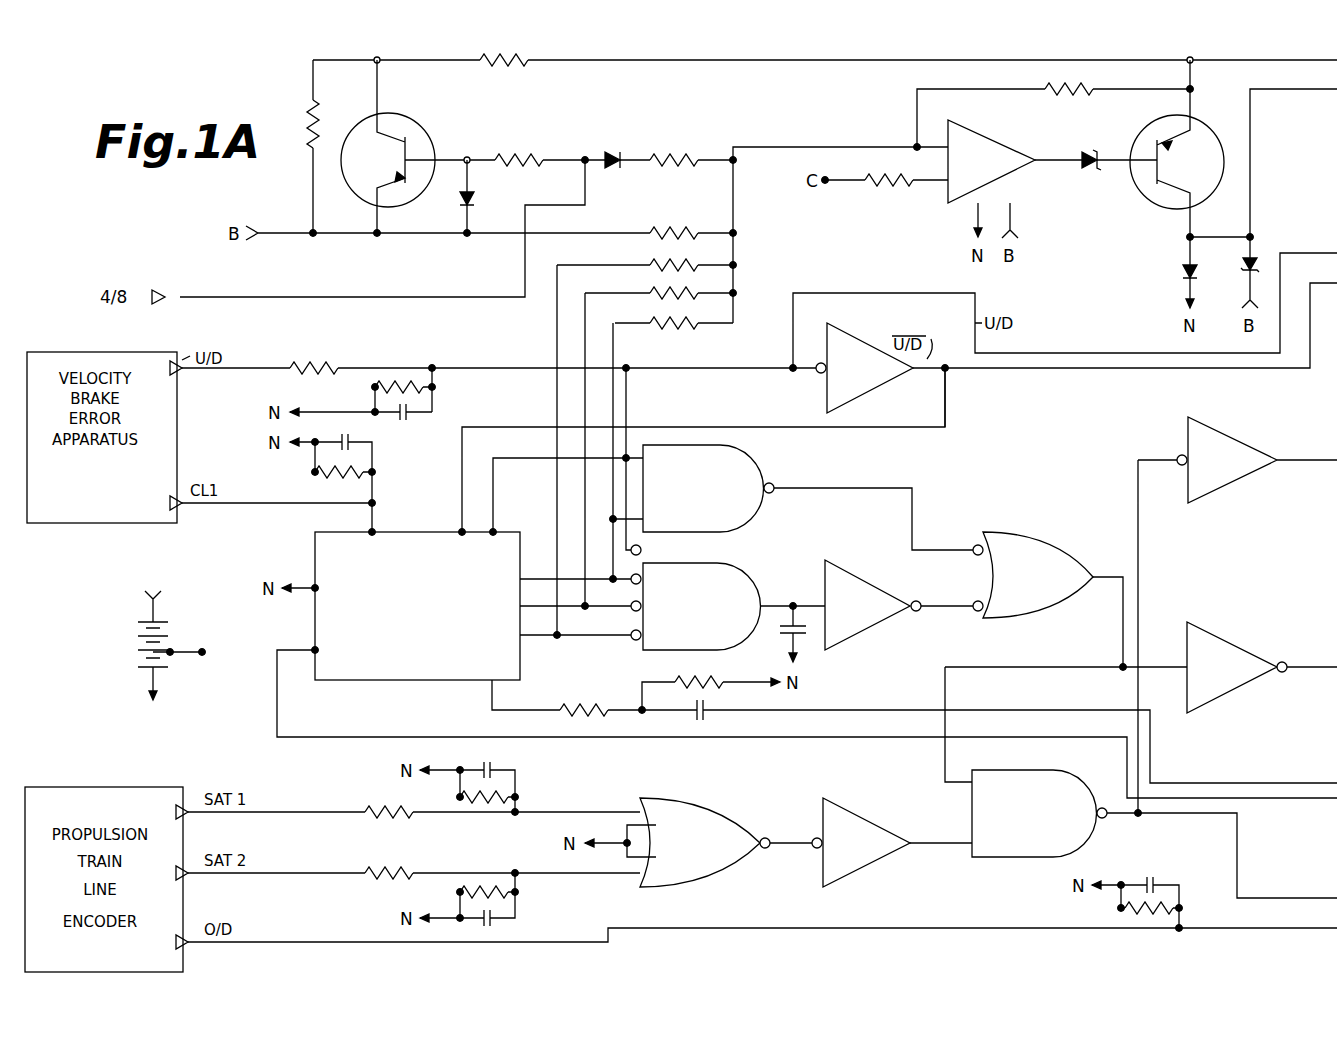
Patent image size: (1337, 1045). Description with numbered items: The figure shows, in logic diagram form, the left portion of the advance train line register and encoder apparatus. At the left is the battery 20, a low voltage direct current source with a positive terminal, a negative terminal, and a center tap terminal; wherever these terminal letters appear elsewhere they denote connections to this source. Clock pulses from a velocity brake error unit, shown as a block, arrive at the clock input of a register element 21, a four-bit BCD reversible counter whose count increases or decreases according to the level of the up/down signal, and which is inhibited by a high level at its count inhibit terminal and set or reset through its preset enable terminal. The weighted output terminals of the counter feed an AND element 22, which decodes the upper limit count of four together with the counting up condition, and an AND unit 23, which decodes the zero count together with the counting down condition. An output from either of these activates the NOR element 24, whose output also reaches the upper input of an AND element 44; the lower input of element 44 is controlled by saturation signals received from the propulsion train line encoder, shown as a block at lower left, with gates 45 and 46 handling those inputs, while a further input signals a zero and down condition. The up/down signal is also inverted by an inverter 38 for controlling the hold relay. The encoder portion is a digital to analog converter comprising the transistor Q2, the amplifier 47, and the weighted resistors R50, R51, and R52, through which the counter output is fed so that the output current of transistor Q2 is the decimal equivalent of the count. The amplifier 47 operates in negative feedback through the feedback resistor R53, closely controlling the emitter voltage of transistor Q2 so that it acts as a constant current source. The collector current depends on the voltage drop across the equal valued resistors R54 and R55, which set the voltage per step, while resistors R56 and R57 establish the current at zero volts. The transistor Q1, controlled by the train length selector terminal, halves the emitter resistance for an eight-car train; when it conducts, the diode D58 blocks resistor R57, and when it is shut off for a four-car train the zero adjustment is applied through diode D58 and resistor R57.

The battery 20 is at (137, 652).
The register element 21 is at (430, 532).
The AND element 22 is at (703, 488).
The AND unit 23 is at (702, 606).
The NOR element 24 is at (1038, 575).
The inverter 38 is at (870, 368).
The AND element 44 is at (1034, 813).
The NOR gate 45 is at (700, 842).
The inverter 46 is at (866, 842).
The amplifier 47 is at (991, 161).
The transistor Q1 is at (425, 130).
The transistor Q2 is at (1162, 202).
The resistor R50 is at (654, 263).
The resistor R51 is at (654, 291).
The resistor R52 is at (654, 321).
The feedback resistor R53 is at (1068, 93).
The resistor R54 is at (321, 130).
The resistor R55 is at (530, 72).
The resistor R56 is at (654, 229).
The resistor R57 is at (674, 156).
The diode D58 is at (620, 156).